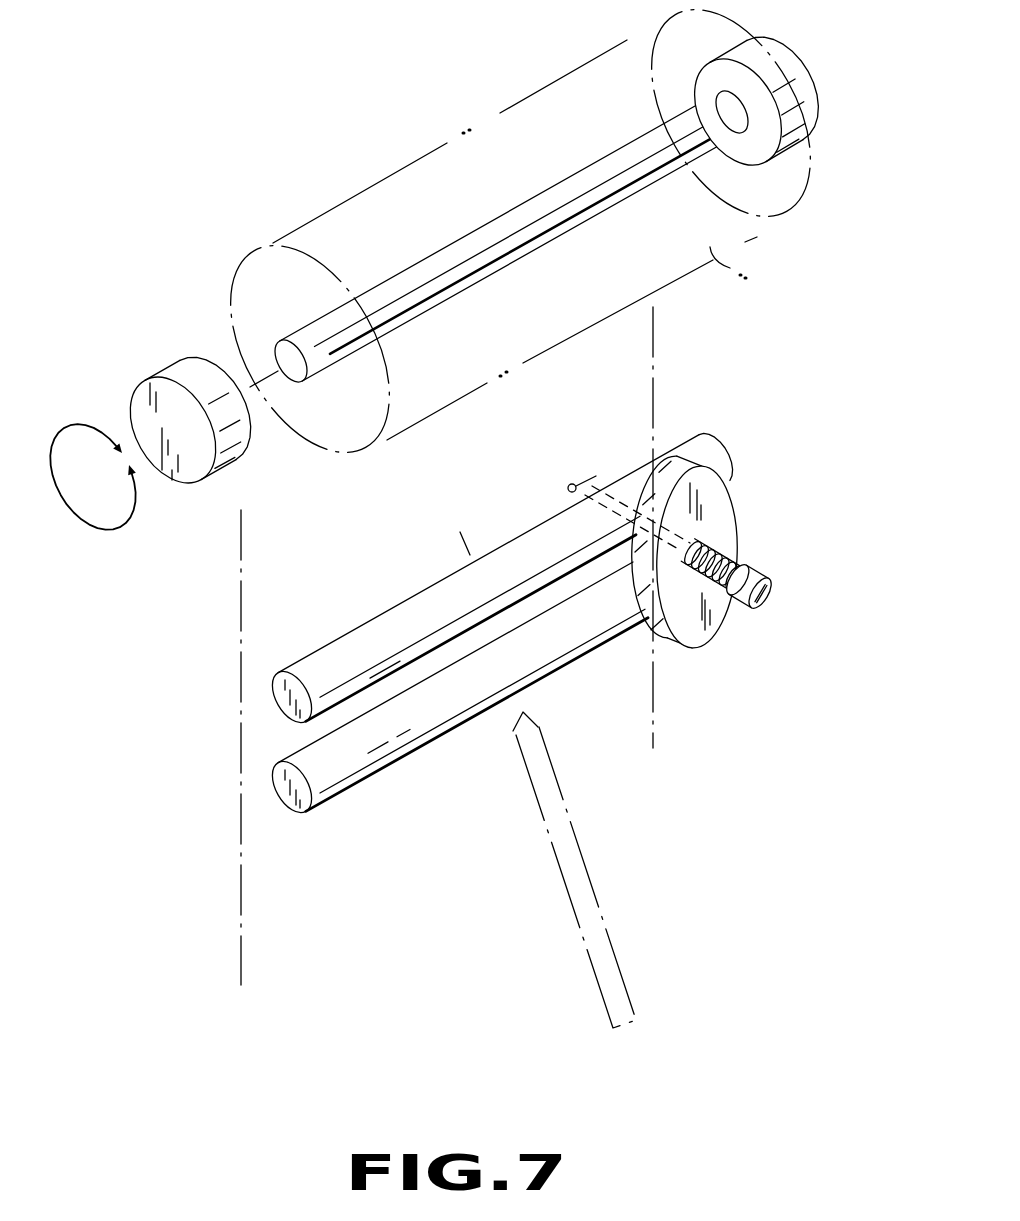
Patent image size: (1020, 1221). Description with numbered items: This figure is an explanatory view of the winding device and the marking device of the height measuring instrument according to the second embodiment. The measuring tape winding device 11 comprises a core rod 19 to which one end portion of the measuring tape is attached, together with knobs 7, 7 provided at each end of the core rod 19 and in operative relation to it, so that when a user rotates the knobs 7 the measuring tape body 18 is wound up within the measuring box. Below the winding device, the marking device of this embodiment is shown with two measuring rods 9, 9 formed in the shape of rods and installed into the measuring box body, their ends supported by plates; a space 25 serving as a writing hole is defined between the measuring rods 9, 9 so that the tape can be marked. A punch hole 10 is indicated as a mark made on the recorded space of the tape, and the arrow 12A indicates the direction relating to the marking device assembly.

The knob 7 is at (807, 97).
The measuring rod 9 is at (423, 612).
The punch hole 10 is at (581, 470).
The measuring tape winding device 11 is at (388, 268).
The direction arrow / slot 12A is at (585, 668).
The measuring tape body 18 is at (750, 278).
The core rod 19 is at (523, 207).
The space 25 is at (517, 613).